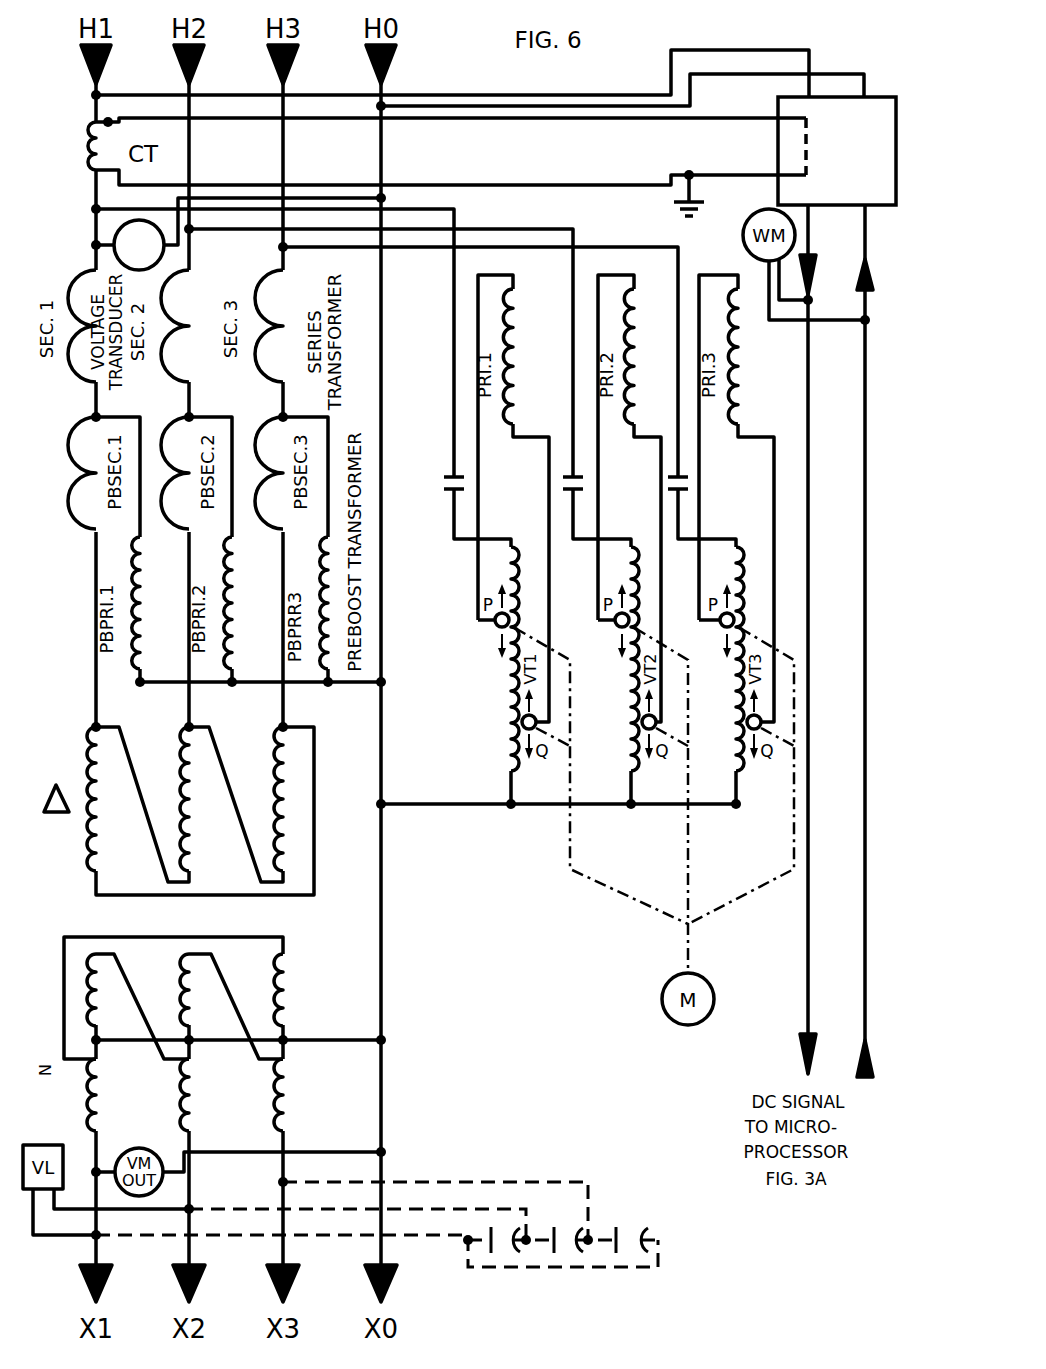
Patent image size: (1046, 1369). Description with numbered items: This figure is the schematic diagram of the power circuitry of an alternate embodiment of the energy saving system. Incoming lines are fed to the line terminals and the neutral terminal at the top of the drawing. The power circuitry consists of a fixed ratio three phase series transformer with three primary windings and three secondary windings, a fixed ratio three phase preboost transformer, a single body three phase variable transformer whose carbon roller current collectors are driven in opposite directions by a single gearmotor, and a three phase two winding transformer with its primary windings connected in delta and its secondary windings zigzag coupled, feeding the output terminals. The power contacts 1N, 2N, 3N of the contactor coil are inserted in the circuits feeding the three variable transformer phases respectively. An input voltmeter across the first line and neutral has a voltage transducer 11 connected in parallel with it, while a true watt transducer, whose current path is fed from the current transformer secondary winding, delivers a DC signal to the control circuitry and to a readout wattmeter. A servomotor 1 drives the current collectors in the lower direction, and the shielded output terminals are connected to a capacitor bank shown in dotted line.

The servomotor 1 is at (878, 98).
The voltage transducer 11 is at (120, 228).
The power contact 1N is at (439, 485).
The power contact 2N is at (594, 485).
The power contact 3N is at (698, 485).